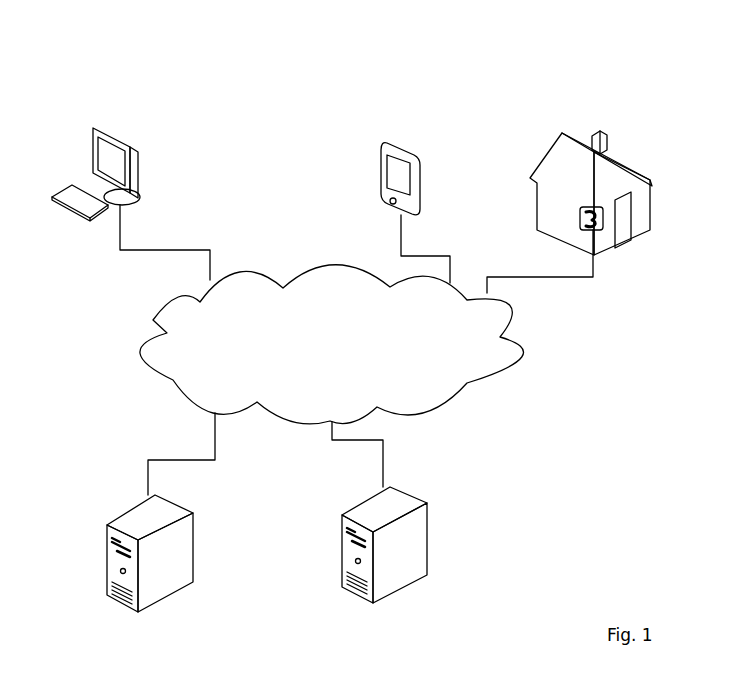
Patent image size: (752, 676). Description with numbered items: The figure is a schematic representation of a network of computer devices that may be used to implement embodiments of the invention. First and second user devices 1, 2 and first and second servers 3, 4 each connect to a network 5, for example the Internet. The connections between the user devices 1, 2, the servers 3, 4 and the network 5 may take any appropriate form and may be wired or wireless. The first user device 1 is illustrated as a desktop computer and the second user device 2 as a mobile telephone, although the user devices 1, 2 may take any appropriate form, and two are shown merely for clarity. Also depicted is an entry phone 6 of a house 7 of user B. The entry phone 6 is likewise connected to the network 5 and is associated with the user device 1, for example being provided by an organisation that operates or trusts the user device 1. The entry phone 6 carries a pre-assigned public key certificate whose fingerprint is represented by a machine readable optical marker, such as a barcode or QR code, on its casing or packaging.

The first user device 1 is at (105, 128).
The second user device 2 is at (390, 140).
The first server 3 is at (107, 525).
The second server 4 is at (427, 503).
The network 5 is at (467, 397).
The entry phone 6 is at (580, 217).
The house 7 is at (551, 150).